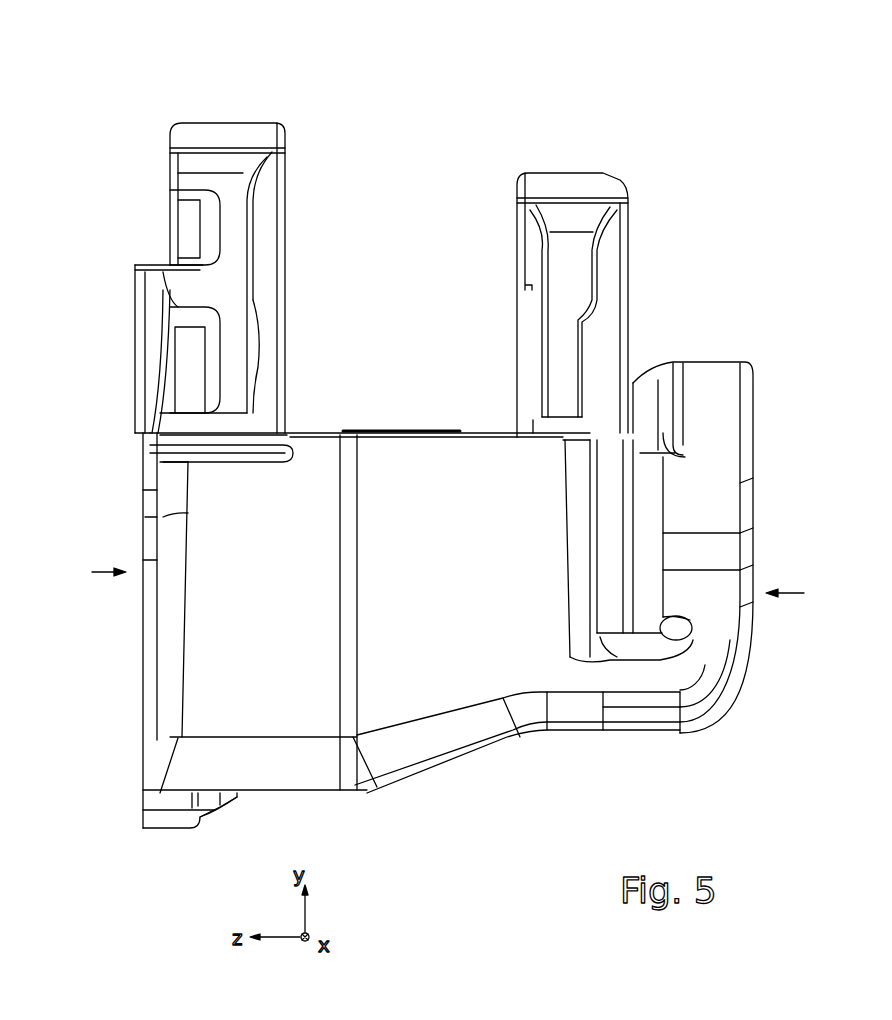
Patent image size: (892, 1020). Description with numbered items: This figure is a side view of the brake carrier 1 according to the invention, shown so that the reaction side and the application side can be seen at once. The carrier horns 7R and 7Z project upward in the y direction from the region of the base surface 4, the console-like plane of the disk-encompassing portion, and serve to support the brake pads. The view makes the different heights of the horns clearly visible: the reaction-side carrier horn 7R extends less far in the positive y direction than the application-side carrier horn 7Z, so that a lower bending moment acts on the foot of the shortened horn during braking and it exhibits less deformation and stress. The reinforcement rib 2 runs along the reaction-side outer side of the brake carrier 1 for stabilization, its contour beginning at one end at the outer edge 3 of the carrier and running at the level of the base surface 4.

The brake carrier 1 is at (687, 118).
The reinforcement rib 2 is at (695, 356).
The outer edge 3 is at (392, 565).
The base surface 4 is at (485, 433).
The carrier horn 7Z is at (222, 140).
The carrier horn 7R is at (570, 185).